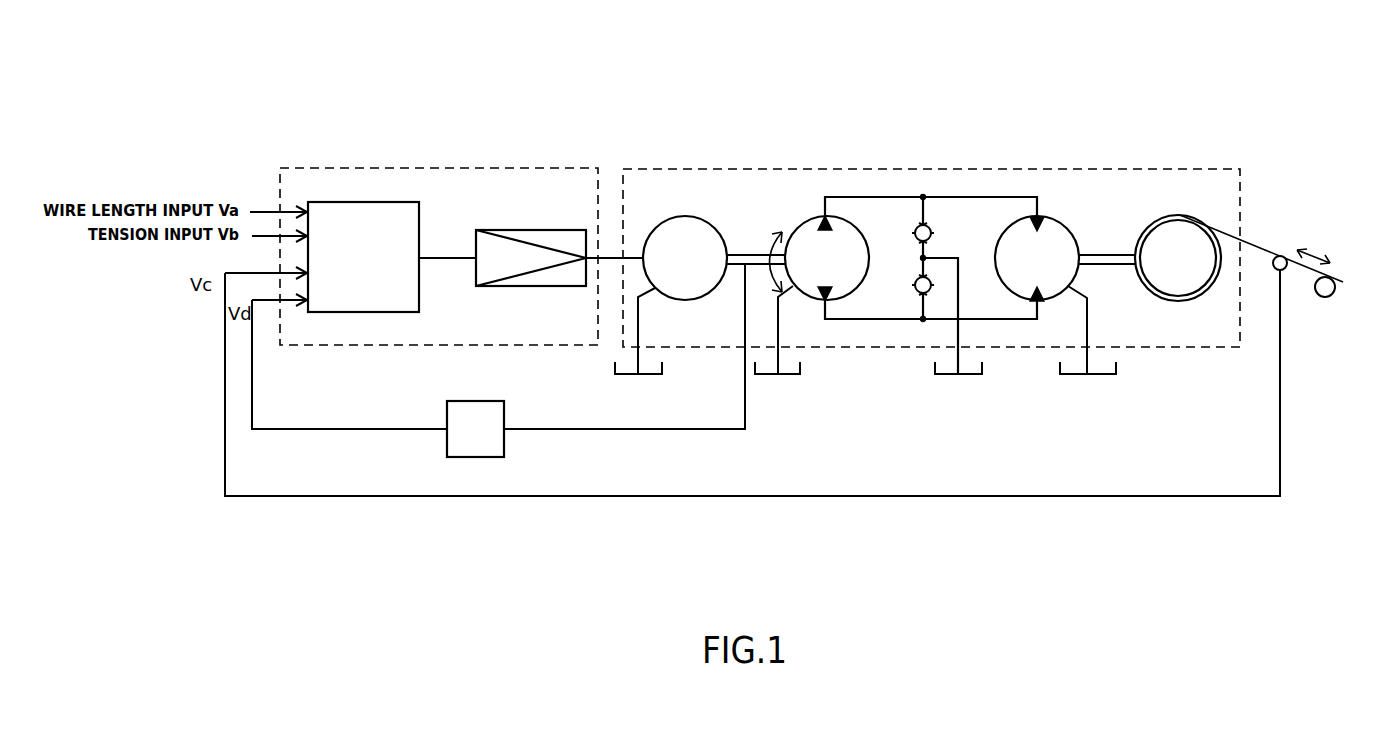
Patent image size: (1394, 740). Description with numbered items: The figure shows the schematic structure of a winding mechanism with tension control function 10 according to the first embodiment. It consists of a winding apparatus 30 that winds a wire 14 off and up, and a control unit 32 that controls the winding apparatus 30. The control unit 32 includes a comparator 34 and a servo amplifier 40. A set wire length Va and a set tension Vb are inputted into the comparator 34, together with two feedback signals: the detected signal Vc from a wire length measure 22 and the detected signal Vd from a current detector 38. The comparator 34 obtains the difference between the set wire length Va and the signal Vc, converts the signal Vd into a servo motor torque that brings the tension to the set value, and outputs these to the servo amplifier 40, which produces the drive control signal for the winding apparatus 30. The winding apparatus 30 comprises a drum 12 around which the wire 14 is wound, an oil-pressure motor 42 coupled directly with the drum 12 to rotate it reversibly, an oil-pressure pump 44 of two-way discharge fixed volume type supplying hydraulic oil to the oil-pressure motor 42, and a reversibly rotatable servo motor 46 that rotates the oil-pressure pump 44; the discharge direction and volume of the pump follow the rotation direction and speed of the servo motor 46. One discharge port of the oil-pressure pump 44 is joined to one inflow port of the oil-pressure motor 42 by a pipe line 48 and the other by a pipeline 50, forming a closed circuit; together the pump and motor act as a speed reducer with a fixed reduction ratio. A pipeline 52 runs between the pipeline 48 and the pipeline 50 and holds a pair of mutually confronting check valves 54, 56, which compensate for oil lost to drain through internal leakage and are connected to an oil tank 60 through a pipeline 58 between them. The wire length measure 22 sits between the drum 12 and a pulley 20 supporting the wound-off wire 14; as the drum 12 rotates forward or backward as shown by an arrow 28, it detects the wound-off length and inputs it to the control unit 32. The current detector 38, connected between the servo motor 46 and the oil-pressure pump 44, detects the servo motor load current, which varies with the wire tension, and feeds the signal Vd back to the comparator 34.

The winding mechanism with tension control function 10 is at (898, 68).
The drum 12 is at (1180, 215).
The wire 14 is at (1260, 243).
The pulley 20 is at (1333, 294).
The wire length measure 22 is at (1283, 270).
The arrow 28 is at (1317, 247).
The winding apparatus 30 is at (1100, 168).
The control unit 32 is at (446, 168).
The comparator 34 is at (367, 202).
The current detector 38 is at (505, 413).
The servo amplifier 40 is at (555, 230).
The oil-pressure motor 42 is at (1037, 216).
The oil-pressure pump 44 is at (810, 216).
The servo motor 46 is at (685, 216).
The pipe line 48 is at (865, 197).
The pipeline 50 is at (867, 320).
The pipeline 52 is at (922, 318).
The check valve 54 is at (916, 283).
The check valve 56 is at (913, 231).
The pipeline 58 is at (962, 308).
The oil tank 60 is at (628, 378).